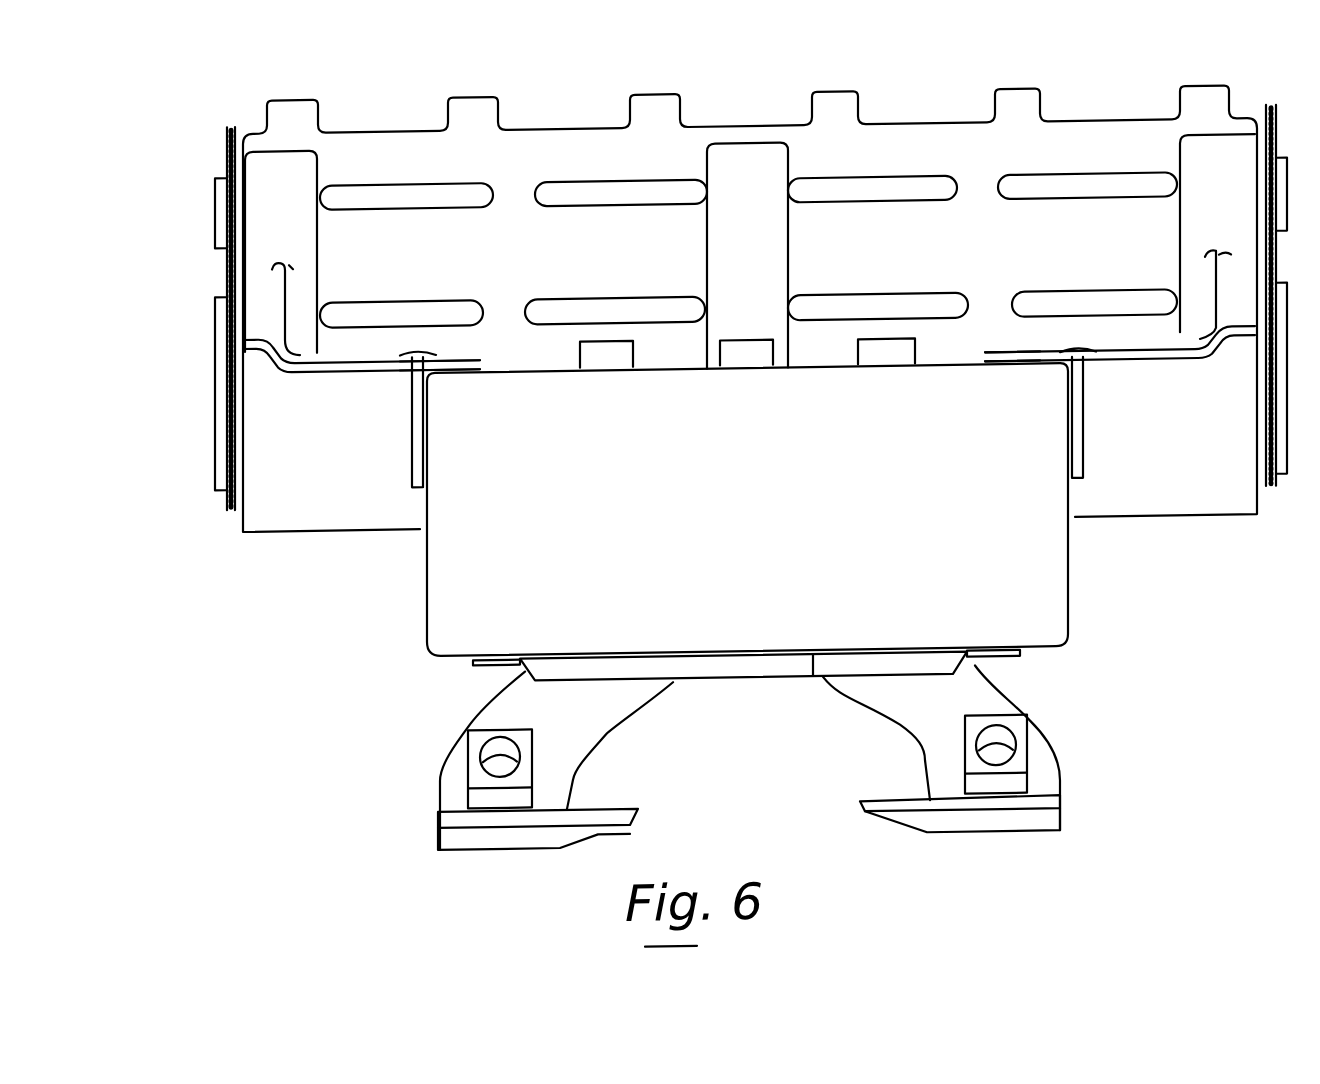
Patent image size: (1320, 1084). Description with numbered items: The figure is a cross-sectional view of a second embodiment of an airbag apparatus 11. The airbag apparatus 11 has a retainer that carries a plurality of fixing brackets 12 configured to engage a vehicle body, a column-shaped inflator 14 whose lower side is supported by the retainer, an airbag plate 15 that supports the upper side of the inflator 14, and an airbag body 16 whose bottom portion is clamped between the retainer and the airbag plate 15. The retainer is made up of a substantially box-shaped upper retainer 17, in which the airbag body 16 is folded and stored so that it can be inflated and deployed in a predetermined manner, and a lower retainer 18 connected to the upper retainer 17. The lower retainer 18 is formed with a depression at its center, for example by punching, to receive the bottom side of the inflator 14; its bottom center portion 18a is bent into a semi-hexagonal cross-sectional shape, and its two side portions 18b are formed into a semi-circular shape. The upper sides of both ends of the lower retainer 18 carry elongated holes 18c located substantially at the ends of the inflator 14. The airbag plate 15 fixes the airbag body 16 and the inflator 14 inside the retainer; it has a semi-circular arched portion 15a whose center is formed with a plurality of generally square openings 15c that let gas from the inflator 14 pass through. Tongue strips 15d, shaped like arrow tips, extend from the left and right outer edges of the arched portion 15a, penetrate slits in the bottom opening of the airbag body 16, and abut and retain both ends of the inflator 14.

The airbag apparatus 11 is at (243, 684).
The fixing brackets 12 is at (440, 783).
The inflator 14 is at (1068, 618).
The airbag plate 15 is at (983, 335).
The arched portion 15a is at (887, 342).
The openings 15c is at (541, 347).
The tongue strips 15d is at (426, 372).
The airbag body 16 is at (283, 275).
The upper retainer 17 is at (196, 485).
The lower retainer 18 is at (225, 535).
The bottom center portion 18a is at (740, 683).
The side portions 18b is at (485, 664).
The elongated holes 18c is at (401, 368).